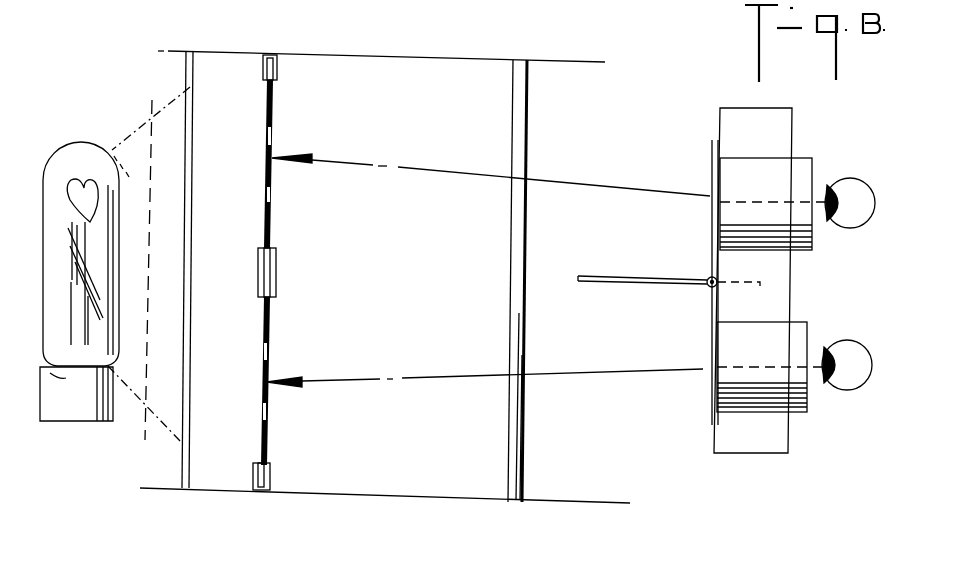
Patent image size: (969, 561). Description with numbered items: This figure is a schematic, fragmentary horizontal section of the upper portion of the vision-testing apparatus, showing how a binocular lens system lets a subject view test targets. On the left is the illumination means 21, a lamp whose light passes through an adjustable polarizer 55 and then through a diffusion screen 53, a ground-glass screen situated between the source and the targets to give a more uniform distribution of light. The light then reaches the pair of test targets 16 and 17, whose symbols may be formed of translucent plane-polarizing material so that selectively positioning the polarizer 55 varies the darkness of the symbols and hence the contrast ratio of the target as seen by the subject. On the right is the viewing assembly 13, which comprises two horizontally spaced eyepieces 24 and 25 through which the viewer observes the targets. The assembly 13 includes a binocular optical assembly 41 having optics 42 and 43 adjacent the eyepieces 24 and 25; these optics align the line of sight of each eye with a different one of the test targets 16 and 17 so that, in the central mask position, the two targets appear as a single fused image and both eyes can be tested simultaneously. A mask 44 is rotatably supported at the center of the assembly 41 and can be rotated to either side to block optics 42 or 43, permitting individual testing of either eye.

The viewing assembly 13 is at (833, 281).
The test target 16 is at (273, 138).
The test target 17 is at (270, 327).
The illumination means 21 is at (88, 153).
The eyepiece 24 is at (807, 398).
The eyepiece 25 is at (813, 175).
The binocular optical assembly 41 is at (706, 233).
The optics 42 is at (717, 388).
The optics 43 is at (728, 172).
The mask 44 is at (602, 284).
The diffusion screen 53 is at (190, 362).
The adjustable polarizer 55 is at (152, 102).